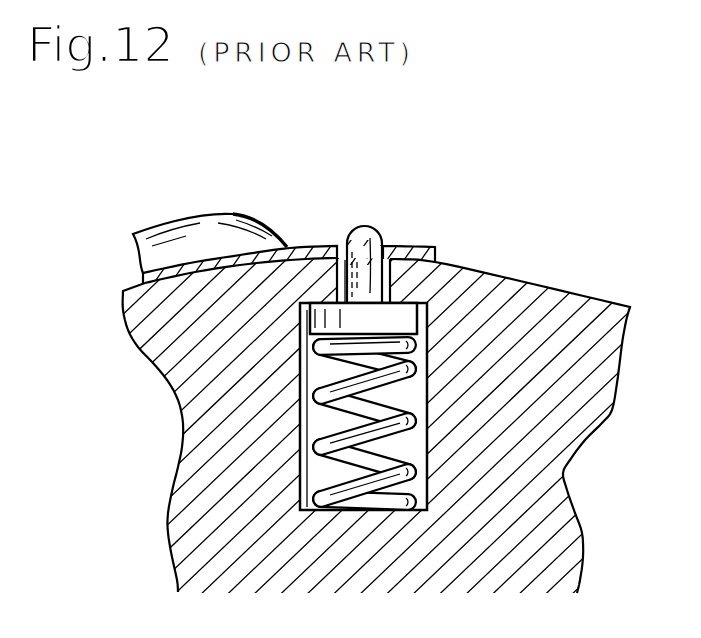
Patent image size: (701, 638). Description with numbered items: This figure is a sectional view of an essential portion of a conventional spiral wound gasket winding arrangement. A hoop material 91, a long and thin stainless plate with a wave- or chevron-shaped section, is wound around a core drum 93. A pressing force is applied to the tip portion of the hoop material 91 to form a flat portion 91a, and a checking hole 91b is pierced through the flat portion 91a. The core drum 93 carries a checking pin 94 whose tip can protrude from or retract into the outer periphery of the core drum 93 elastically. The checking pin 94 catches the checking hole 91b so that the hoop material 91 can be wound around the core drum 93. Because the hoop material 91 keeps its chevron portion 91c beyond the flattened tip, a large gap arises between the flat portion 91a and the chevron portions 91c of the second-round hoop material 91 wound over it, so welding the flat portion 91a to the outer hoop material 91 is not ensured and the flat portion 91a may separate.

The hoop material 91 is at (209, 216).
The flat portion 91a is at (406, 247).
The checking hole 91b is at (362, 236).
The chevron portion 91c is at (178, 237).
The core drum 93 is at (553, 317).
The checking pin 94 is at (381, 236).